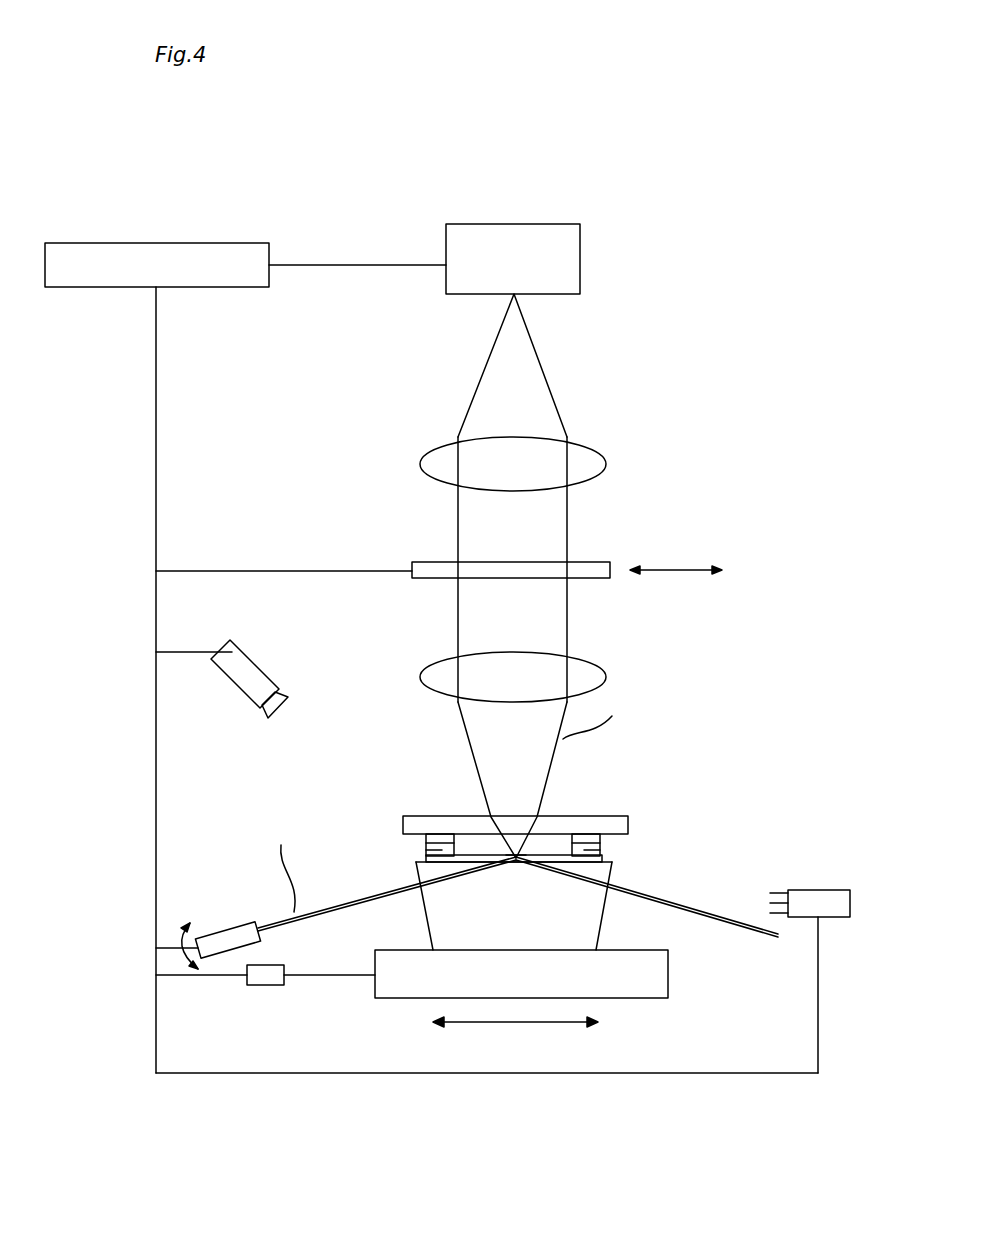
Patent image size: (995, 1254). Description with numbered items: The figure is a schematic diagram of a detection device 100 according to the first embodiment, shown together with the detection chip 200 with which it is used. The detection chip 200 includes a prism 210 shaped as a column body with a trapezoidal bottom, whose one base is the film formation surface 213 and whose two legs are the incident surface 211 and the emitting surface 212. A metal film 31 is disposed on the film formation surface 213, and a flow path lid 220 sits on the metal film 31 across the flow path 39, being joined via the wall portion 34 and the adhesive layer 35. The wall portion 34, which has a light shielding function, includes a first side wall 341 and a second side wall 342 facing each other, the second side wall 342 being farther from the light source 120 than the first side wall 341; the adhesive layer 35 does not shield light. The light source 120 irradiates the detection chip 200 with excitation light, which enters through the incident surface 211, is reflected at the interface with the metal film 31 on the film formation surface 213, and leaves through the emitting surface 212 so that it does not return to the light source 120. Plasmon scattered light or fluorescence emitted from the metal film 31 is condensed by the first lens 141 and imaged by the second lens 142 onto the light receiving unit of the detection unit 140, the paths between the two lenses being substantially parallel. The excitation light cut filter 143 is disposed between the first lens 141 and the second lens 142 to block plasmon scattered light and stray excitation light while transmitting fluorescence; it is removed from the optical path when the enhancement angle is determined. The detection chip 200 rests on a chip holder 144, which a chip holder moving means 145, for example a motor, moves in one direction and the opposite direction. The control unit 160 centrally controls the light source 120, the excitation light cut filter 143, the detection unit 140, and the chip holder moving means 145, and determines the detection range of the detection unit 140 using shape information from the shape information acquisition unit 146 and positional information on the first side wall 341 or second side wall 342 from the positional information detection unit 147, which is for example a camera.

The detection device 100 is at (755, 268).
The light source 120 is at (224, 922).
The detection unit 140 is at (580, 264).
The first lens 141 is at (420, 677).
The second lens 142 is at (420, 464).
The excitation light cut filter 143 is at (412, 567).
The chip holder 144 is at (668, 982).
The chip holder moving means 145 is at (268, 986).
The shape information acquisition unit 146 is at (818, 890).
The positional information detection unit 147 is at (258, 669).
The control unit 160 is at (145, 243).
The detection chip 200 is at (350, 807).
The prism 210 is at (427, 932).
The incident surface 211 is at (412, 878).
The emitting surface 212 is at (603, 920).
The film formation surface 213 is at (553, 872).
The flow path lid 220 is at (628, 818).
The metal film 31 is at (542, 847).
The wall portion 34 is at (530, 847).
The first side wall 341 is at (440, 843).
The second side wall 342 is at (602, 845).
The adhesive layer 35 is at (628, 836).
The flow path 39 is at (473, 845).